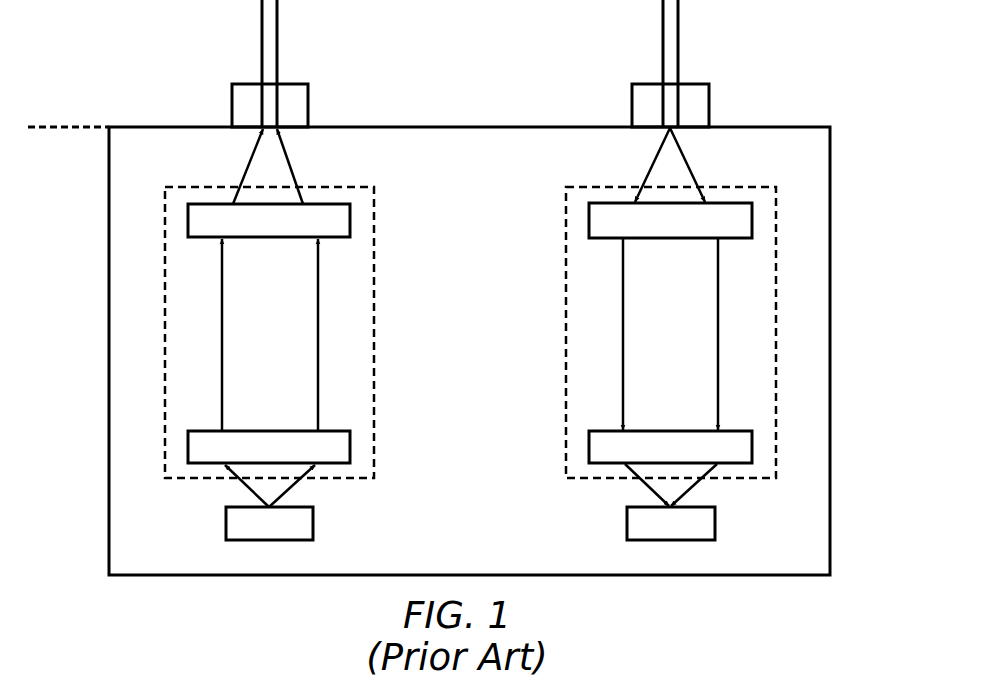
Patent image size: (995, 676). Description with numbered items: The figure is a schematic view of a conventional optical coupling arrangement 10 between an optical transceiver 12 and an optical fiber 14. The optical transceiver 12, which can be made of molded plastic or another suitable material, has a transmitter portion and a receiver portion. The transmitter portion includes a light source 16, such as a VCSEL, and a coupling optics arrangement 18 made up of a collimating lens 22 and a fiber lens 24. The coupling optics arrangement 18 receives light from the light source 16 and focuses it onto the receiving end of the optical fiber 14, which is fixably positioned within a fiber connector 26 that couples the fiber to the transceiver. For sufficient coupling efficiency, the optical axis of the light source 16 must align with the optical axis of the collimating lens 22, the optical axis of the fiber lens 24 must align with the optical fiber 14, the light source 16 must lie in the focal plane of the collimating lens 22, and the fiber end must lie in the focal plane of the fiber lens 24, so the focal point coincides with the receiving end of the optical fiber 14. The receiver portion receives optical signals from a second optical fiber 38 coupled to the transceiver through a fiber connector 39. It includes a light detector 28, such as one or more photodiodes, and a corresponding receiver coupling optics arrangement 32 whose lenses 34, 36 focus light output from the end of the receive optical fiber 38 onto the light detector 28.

The optical coupling arrangement 10 is at (750, 77).
The optical transceiver 12 is at (832, 181).
The optical fiber 14 is at (273, 36).
The light source 16 is at (298, 521).
The coupling optics arrangement 18 is at (375, 284).
The collimating lens 22 is at (338, 448).
The fiber lens 24 is at (338, 218).
The fiber connector 26 is at (297, 103).
The light detector 28 is at (638, 525).
The receiver coupling optics arrangement 32 is at (566, 361).
The lens 34 is at (603, 223).
The lens 36 is at (600, 447).
The optical fiber 38 is at (667, 37).
The fiber connector 39 is at (642, 100).